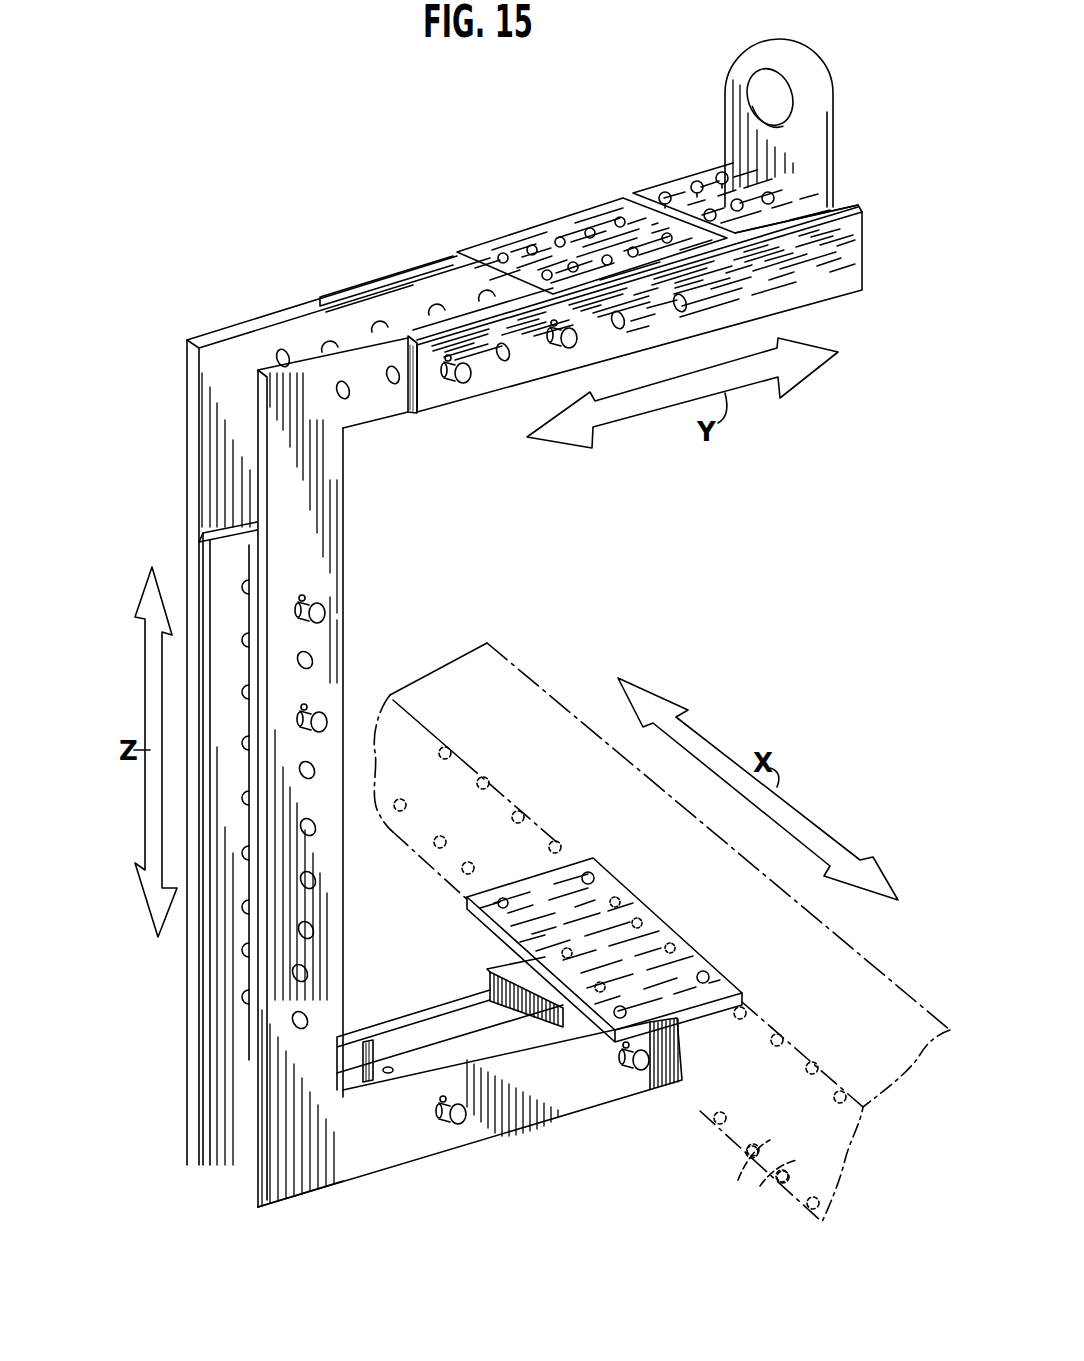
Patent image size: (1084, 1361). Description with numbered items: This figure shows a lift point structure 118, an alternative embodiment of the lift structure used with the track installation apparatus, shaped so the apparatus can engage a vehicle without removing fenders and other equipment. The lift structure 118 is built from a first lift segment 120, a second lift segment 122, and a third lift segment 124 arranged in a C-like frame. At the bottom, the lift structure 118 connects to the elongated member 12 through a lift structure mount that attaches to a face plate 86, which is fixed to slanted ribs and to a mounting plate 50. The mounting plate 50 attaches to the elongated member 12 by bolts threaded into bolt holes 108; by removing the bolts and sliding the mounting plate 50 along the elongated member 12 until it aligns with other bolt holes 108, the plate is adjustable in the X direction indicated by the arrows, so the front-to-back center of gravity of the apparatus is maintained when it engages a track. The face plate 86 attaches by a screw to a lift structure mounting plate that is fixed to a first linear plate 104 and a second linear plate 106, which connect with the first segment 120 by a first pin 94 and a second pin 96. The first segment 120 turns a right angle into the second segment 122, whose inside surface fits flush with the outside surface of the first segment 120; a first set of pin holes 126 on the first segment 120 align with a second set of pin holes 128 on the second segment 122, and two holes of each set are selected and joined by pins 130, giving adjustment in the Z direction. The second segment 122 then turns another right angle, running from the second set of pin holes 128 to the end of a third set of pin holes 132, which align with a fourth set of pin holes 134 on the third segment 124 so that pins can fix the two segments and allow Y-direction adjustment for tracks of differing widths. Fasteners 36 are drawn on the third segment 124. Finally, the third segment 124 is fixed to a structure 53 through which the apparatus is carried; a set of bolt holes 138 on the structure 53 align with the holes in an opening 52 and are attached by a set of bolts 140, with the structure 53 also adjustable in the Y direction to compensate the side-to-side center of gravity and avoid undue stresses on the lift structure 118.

The elongated member 12 is at (571, 710).
The fasteners 36 is at (567, 350).
The mounting plate 50 is at (478, 926).
The opening 52 is at (787, 102).
The structure 53 is at (599, 212).
The face plate 86 is at (488, 978).
The first pin 94 is at (640, 1068).
The second pin 96 is at (460, 1128).
The first linear plate 104 is at (393, 1035).
The second linear plate 106 is at (433, 1067).
The bolt holes 108 is at (752, 1175).
The lift point structure 118 is at (178, 313).
The first lift segment 120 is at (258, 1203).
The second lift segment 122 is at (260, 476).
The third lift segment 124 is at (428, 333).
The first set of pin holes 126 is at (292, 974).
The second set of pin holes 128 is at (316, 825).
The pins 130 is at (327, 723).
The third set of pin holes 132 is at (290, 366).
The fourth set of pin holes 134 is at (681, 313).
The set of bolt holes 138 is at (547, 268).
The set of bolts 140 is at (722, 172).